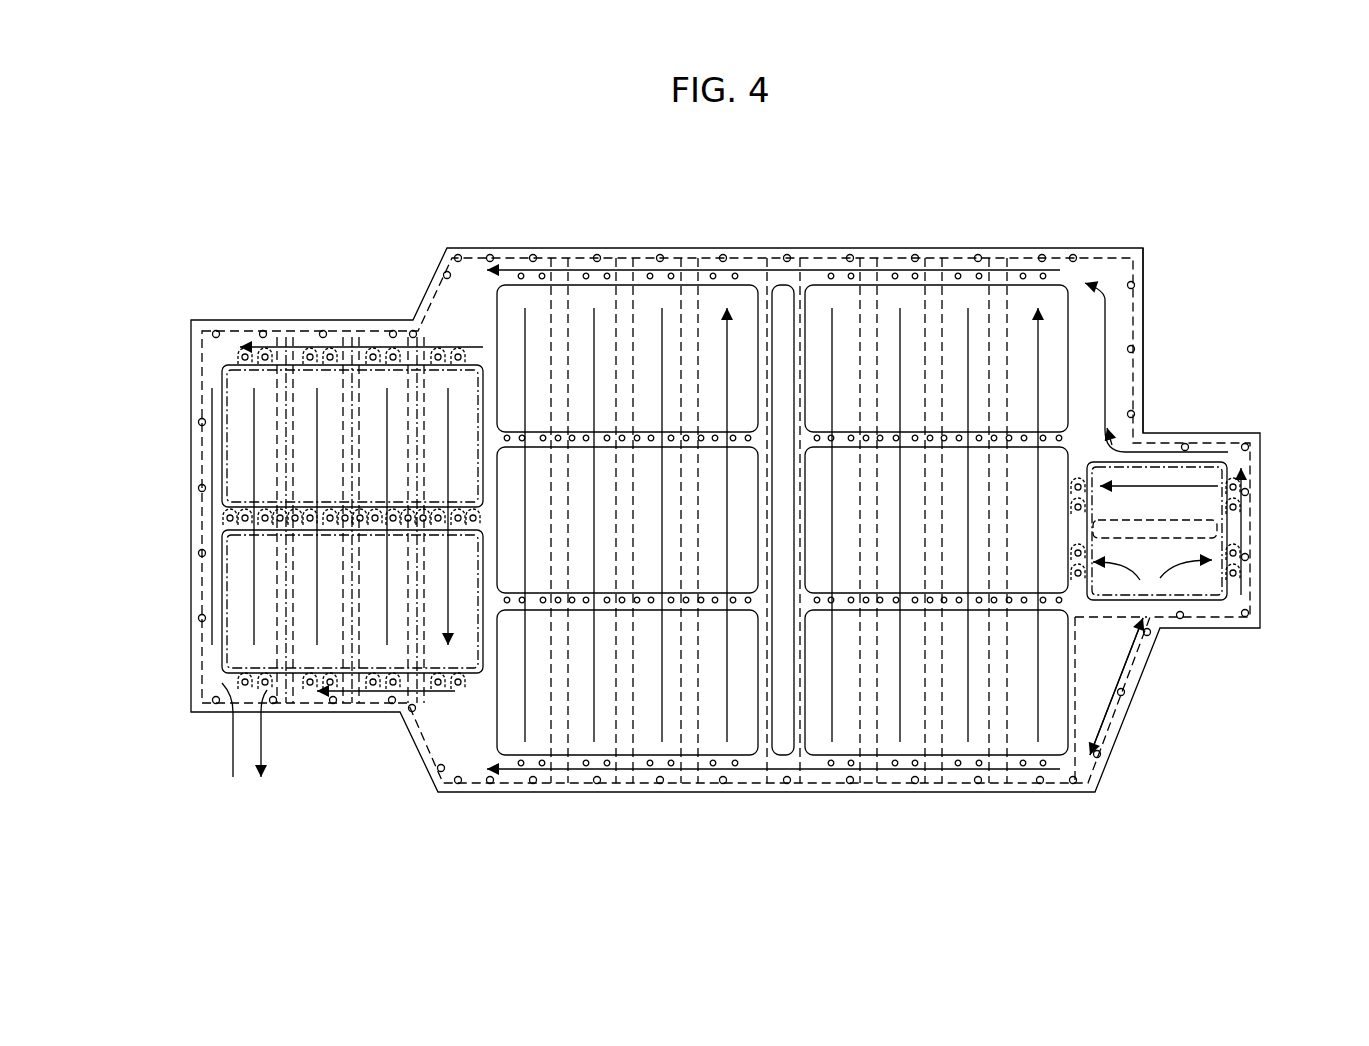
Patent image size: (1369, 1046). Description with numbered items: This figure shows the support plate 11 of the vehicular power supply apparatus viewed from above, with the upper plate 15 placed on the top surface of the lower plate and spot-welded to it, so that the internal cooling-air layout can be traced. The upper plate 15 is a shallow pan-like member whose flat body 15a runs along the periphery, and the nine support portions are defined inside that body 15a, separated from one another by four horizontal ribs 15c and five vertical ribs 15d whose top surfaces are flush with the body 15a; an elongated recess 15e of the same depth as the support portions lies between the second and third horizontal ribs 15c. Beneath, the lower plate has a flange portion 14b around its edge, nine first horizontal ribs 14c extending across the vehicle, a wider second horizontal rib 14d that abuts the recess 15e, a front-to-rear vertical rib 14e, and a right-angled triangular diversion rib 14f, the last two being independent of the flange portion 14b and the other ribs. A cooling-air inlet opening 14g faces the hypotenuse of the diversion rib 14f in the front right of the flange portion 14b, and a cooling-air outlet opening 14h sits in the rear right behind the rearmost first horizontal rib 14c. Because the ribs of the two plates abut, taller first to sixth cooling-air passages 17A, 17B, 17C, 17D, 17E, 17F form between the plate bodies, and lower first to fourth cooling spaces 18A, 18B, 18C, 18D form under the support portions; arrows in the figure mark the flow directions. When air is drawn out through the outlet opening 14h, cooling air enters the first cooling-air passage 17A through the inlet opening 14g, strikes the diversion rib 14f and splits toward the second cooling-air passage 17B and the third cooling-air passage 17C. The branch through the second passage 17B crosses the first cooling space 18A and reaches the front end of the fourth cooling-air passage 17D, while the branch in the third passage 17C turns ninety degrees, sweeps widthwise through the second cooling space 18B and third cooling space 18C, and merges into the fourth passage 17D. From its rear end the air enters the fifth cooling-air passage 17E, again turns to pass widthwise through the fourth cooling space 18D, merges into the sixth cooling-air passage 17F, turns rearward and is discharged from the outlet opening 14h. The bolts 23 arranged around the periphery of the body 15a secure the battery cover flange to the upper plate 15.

The support plate 11 is at (783, 202).
The upper plate 15 is at (603, 247).
The body 15a is at (1115, 275).
The horizontal rib 15c is at (803, 330).
The vertical rib 15d is at (583, 437).
The elongated recess 15e is at (783, 733).
The flange portion 14b is at (887, 252).
The first horizontal rib 14c is at (340, 650).
The second horizontal rib 14d is at (765, 310).
The vertical rib 14e is at (1213, 543).
The diversion rib 14f is at (1110, 737).
The cooling-air inlet opening 14g is at (1100, 737).
The cooling-air outlet opening 14h is at (222, 712).
The first cooling-air passage 17A is at (1105, 727).
The second cooling-air passage 17B is at (1105, 365).
The third cooling-air passage 17C is at (882, 785).
The fourth cooling-air passage 17D is at (931, 270).
The fifth cooling-air passage 17E is at (310, 347).
The sixth cooling-air passage 17F is at (370, 693).
The first cooling space 18A is at (1160, 577).
The second cooling space 18B is at (833, 497).
The third cooling space 18C is at (527, 497).
The fourth cooling space 18D is at (257, 555).
The bolt 23 is at (533, 258).